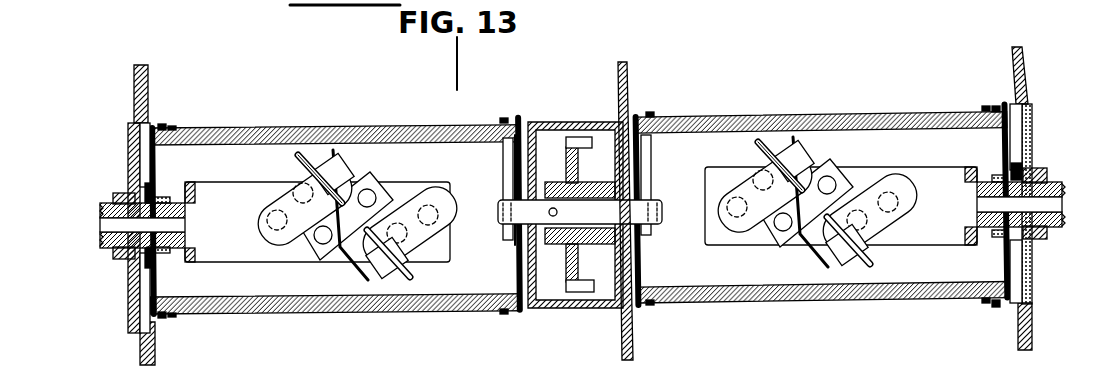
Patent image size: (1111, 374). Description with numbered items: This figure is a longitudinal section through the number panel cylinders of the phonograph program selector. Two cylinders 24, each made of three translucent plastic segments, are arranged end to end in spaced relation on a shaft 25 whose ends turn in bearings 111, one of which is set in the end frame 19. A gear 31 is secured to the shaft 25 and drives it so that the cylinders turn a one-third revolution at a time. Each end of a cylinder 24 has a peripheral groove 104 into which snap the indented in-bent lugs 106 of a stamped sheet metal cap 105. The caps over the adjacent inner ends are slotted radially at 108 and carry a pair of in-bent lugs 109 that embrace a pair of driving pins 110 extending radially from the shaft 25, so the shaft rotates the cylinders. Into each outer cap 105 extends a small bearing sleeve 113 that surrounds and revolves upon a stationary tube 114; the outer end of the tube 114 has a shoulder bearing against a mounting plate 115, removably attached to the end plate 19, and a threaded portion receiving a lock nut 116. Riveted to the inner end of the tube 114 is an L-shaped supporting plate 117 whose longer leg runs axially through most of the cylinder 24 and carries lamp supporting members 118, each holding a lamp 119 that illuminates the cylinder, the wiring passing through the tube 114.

The end plate 19 is at (134, 92).
The cylinder 24 is at (270, 128).
The shaft 25 is at (648, 234).
The gear 31 is at (566, 170).
The peripheral groove 104 is at (185, 128).
The cap 105 is at (145, 165).
The in-bent lug 106 is at (163, 126).
The radial slot 108 is at (532, 140).
The in-bent lug 109 is at (506, 132).
The driving pin 110 is at (503, 178).
The bearing 111 is at (646, 195).
The bearing sleeve 113 is at (163, 198).
The tube 114 is at (127, 196).
The mounting plate 115 is at (130, 300).
The lock nut 116 is at (117, 250).
The supporting plate 117 is at (235, 254).
The lamp supporting member 118 is at (305, 158).
The lamp 119 is at (262, 228).